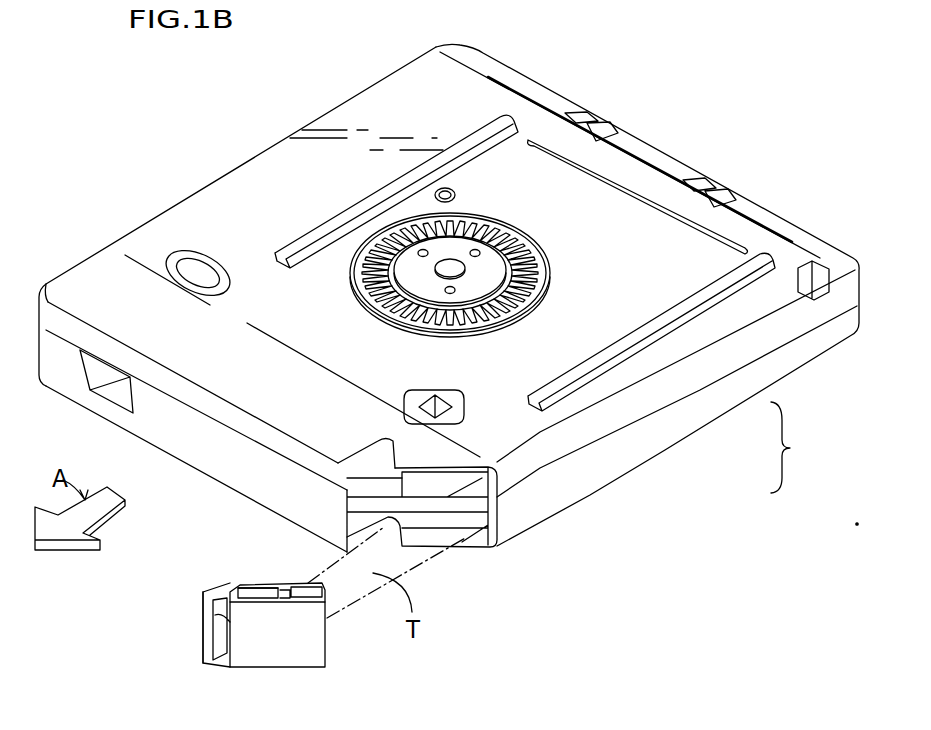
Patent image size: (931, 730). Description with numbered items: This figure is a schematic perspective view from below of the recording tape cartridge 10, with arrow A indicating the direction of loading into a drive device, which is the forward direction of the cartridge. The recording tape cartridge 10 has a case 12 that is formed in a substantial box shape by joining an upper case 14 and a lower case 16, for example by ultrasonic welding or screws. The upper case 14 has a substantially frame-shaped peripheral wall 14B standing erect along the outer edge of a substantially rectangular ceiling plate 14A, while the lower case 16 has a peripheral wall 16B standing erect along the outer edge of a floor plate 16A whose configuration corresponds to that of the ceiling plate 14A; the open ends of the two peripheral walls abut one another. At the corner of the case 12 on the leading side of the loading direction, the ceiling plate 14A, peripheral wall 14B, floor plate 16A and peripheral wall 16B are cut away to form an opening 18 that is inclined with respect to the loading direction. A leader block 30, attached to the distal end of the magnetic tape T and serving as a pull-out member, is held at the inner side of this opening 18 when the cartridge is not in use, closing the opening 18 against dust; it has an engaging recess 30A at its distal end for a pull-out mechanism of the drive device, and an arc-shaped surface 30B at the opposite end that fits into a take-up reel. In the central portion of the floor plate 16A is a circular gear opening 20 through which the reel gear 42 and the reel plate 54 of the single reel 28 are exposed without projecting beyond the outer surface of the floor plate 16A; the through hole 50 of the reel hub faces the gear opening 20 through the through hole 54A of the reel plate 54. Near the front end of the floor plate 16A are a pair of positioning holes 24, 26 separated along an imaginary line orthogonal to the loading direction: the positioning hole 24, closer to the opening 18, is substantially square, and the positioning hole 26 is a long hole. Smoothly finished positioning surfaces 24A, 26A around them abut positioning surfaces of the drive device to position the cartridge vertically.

The recording tape cartridge 10 is at (258, 118).
The case 12 is at (795, 447).
The upper case 14 is at (674, 422).
The ceiling plate 14A is at (472, 545).
The peripheral wall 14B is at (277, 502).
The lower case 16 is at (674, 381).
The floor plate 16A is at (238, 380).
The peripheral wall 16B is at (257, 435).
The opening 18 is at (365, 470).
The gear opening 20 is at (550, 257).
The positioning hole 24 is at (445, 398).
The positioning surface 24A is at (422, 400).
The positioning hole 26 is at (204, 272).
The positioning surface 26A is at (183, 265).
The reel 28 is at (549, 232).
The leader block 30 is at (350, 657).
The engaging recess 30A is at (201, 615).
The arc-shaped surface 30B is at (338, 583).
The reel gear 42 is at (512, 235).
The through hole 50 is at (654, 311).
The reel plate 54 is at (462, 250).
The through hole 54A is at (541, 282).